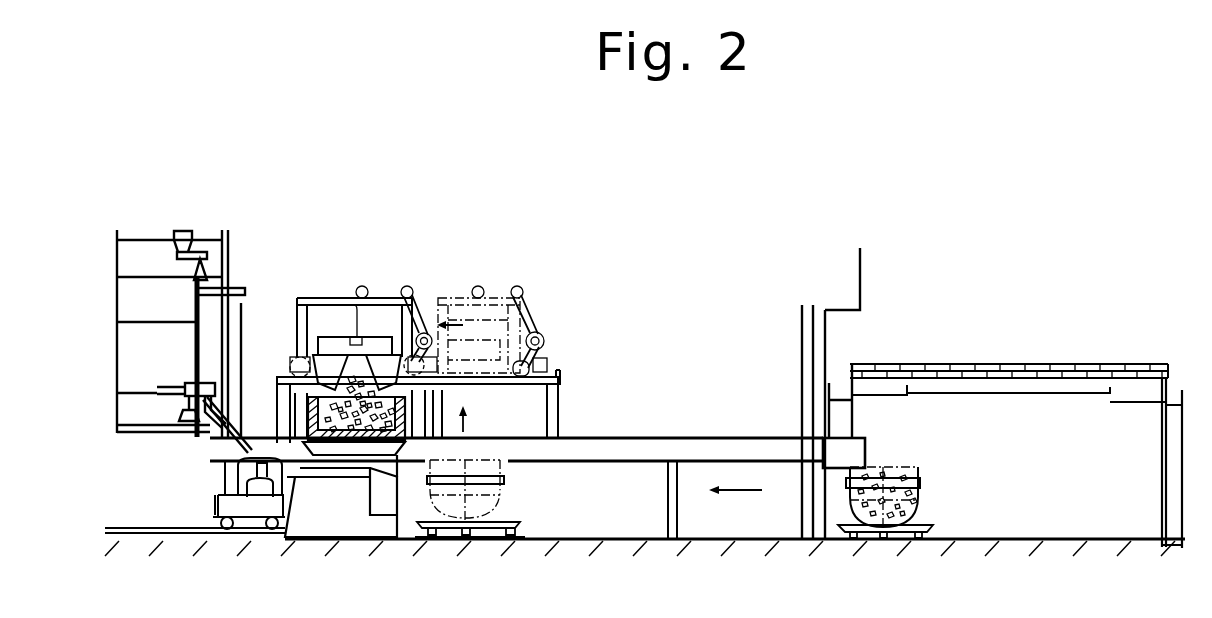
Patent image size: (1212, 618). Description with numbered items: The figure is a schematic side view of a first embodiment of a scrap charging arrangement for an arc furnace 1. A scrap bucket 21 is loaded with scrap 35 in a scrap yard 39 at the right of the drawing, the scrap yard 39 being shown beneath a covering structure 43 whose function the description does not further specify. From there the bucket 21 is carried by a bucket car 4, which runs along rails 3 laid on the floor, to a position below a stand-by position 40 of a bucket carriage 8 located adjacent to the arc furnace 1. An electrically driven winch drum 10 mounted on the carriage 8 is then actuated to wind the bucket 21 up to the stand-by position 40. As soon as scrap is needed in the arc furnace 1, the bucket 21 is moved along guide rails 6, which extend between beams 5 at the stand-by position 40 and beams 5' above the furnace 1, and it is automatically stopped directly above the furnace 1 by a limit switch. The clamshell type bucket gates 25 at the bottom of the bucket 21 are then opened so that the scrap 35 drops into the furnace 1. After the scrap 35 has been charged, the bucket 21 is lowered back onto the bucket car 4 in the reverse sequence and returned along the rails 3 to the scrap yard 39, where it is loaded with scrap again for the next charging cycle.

The arc furnace 1 is at (303, 409).
The rails 3 is at (598, 531).
The bucket car 4 is at (523, 525).
The beams 5 is at (442, 410).
The beams 5' is at (417, 399).
The guide rails 6 is at (558, 375).
The bucket carriage 8 is at (559, 352).
The winch drum 10 is at (424, 330).
The scrap bucket 21 is at (336, 338).
The clamshell type bucket gates 25 is at (310, 362).
The scrap 35 is at (306, 412).
The scrap yard 39 is at (1009, 422).
The stand-by position 40 is at (582, 381).
The roof cover 43 is at (1072, 381).